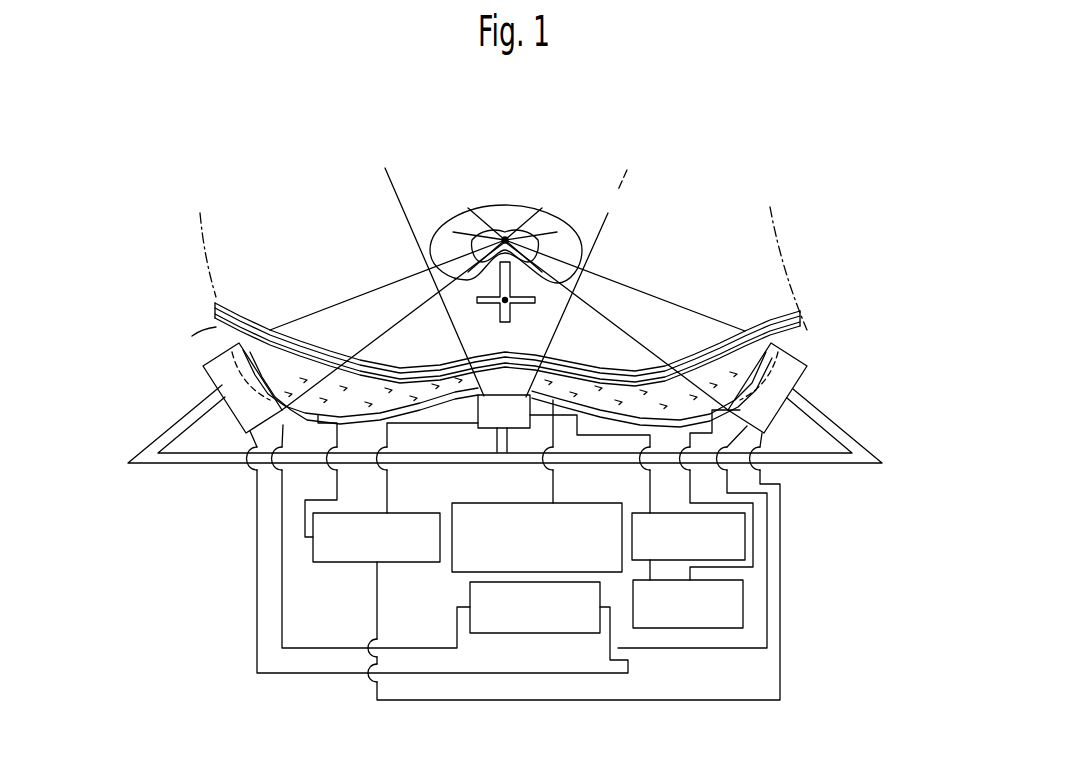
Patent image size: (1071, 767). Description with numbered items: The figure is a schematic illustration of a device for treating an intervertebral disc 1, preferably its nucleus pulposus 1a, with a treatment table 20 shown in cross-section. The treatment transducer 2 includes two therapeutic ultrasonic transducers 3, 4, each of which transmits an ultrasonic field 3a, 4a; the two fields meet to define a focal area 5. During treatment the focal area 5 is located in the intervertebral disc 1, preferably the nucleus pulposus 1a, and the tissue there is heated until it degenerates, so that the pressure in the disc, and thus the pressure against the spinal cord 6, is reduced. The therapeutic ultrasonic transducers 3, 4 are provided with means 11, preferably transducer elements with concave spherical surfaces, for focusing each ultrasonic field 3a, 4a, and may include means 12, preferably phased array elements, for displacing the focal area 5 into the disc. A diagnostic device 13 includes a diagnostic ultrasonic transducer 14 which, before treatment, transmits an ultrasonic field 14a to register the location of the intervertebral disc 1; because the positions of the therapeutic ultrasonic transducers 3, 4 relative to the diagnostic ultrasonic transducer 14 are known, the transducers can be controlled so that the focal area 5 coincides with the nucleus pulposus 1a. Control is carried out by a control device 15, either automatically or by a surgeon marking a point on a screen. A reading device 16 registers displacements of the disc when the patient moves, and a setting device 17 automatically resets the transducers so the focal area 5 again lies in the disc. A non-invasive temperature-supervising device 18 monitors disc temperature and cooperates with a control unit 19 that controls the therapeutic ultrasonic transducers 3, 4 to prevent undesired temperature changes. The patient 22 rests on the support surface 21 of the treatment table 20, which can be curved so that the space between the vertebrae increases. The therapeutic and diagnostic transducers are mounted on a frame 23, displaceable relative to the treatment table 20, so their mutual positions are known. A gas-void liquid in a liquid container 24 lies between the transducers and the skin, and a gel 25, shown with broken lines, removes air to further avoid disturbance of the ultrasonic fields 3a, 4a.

The intervertebral disc 1 is at (533, 192).
The nucleus pulposus 1a is at (507, 238).
The treatment transducer 2 is at (841, 363).
The therapeutic ultrasonic transducer 3 is at (205, 366).
The ultrasonic field 3a is at (337, 305).
The therapeutic ultrasonic transducer 4 is at (799, 380).
The ultrasonic field 4a is at (618, 278).
The focal area 5 is at (582, 235).
The spinal cord 6 is at (485, 300).
The means for focusing 11 is at (231, 396).
The means for displacing the focal area 12 is at (226, 386).
The diagnostic device 13 is at (482, 443).
The diagnostic ultrasonic transducer 14 is at (518, 427).
The ultrasonic field 14a is at (393, 190).
The control device 15 is at (405, 512).
The reading device 16 is at (745, 535).
The setting device 17 is at (743, 610).
The temperature-supervising device 18 is at (577, 503).
The control unit 19 is at (553, 633).
The treatment table 20 is at (531, 278).
The support surface 21 is at (236, 307).
The patient 22 is at (241, 318).
The frame 23 is at (870, 438).
The liquid container 24 is at (290, 405).
The gel 25 is at (720, 352).